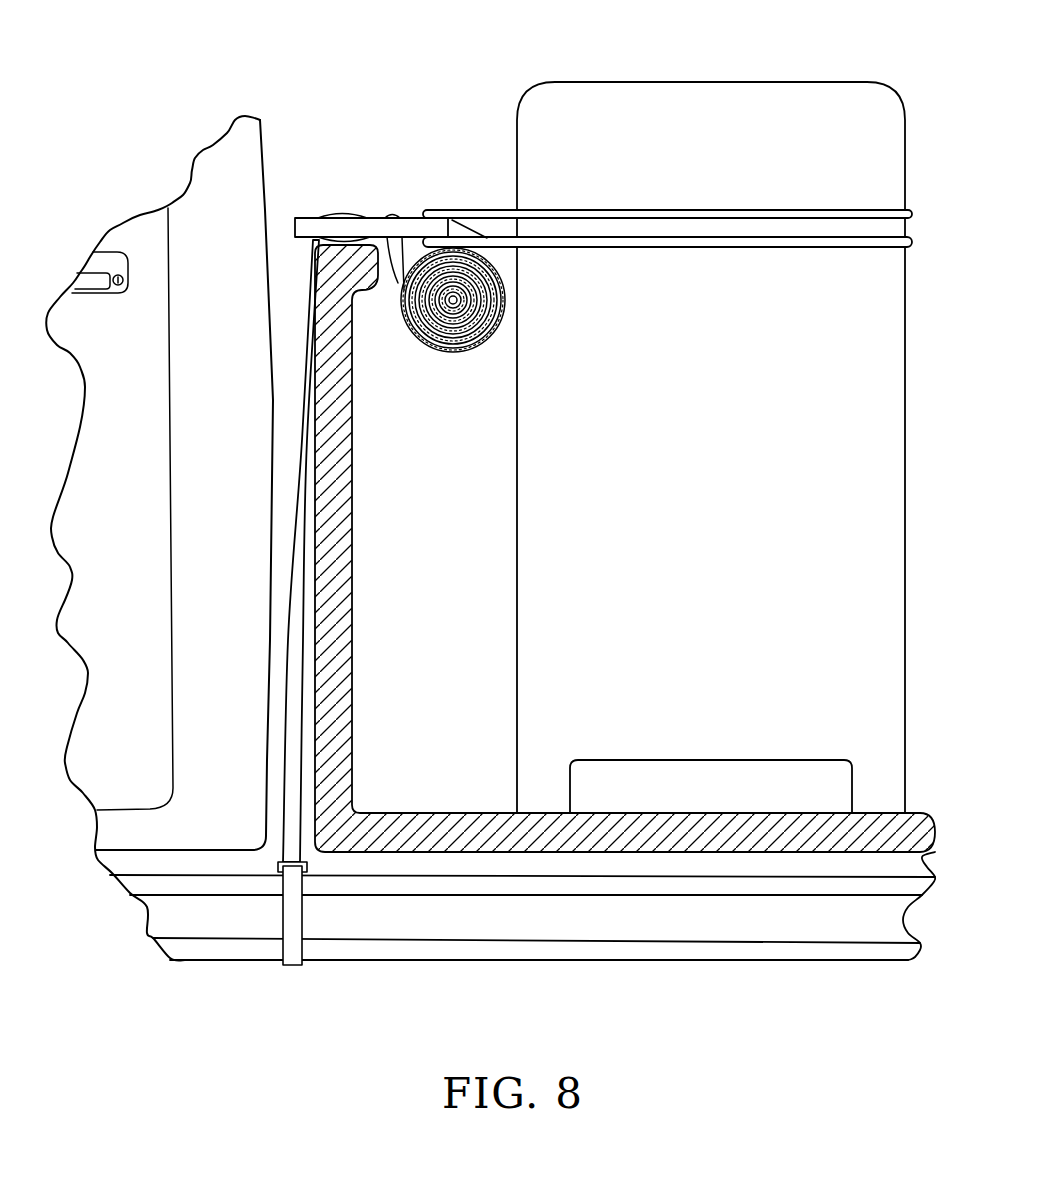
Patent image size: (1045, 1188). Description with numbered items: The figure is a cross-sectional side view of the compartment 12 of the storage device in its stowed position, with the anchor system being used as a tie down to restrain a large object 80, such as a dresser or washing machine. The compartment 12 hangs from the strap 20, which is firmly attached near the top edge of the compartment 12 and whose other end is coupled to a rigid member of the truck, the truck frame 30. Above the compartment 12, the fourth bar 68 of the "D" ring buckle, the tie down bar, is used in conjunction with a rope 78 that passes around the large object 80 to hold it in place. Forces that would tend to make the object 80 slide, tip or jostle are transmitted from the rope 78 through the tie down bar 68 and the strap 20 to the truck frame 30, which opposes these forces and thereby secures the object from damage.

The compartment 12 is at (436, 362).
The strap 20 is at (295, 518).
The truck frame 30 is at (418, 962).
The fourth bar 68 is at (435, 228).
The rope 78 is at (712, 208).
The large object 80 is at (715, 82).